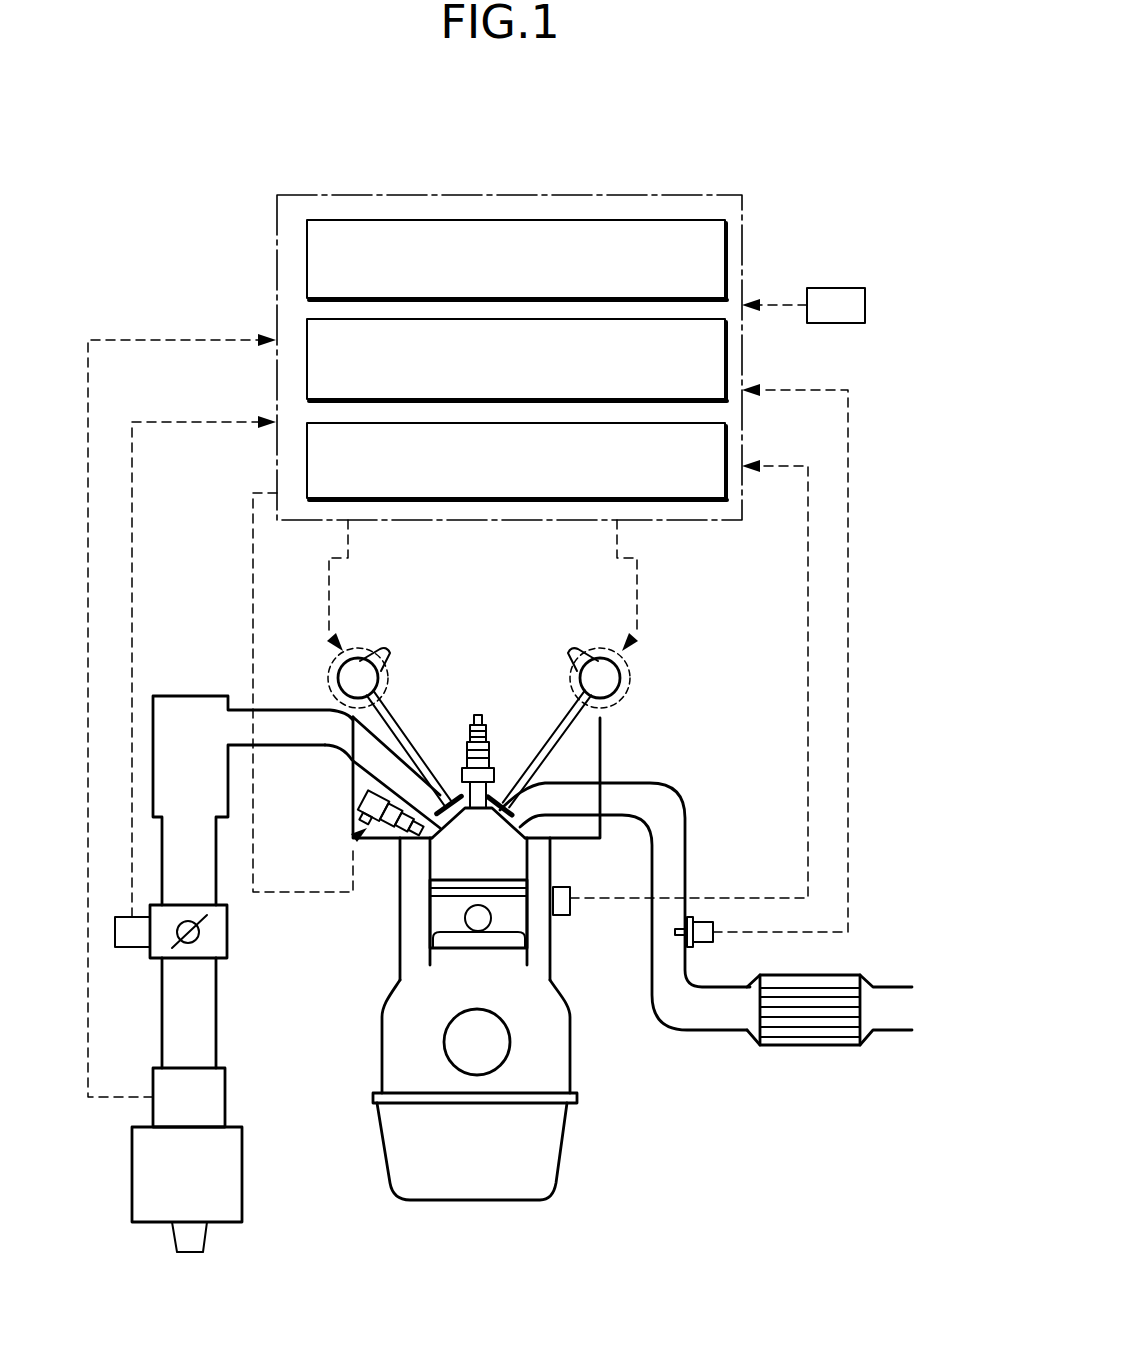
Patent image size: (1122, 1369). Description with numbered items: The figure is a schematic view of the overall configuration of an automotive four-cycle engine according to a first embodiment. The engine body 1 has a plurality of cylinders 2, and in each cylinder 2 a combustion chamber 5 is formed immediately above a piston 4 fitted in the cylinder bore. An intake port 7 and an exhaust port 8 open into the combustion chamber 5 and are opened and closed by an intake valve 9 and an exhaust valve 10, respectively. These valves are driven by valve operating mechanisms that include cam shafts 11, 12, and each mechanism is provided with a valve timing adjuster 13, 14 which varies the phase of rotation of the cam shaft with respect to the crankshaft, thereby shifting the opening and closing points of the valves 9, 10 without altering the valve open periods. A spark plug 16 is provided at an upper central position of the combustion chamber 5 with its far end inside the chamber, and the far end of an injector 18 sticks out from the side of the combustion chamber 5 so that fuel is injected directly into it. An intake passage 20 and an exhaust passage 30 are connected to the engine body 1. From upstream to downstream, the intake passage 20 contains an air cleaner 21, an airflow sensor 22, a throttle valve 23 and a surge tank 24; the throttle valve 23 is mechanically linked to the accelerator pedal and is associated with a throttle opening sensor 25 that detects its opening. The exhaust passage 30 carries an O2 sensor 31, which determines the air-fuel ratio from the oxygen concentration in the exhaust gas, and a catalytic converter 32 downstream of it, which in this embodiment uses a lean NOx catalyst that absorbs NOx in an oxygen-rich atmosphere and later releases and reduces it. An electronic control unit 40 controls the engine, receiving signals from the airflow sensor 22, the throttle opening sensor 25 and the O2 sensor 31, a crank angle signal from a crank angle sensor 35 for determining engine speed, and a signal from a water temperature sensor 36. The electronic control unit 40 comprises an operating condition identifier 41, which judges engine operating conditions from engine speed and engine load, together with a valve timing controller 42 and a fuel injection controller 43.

The engine body 1 is at (585, 1147).
The cylinder 2 is at (440, 865).
The piston 4 is at (515, 918).
The combustion chamber 5 is at (502, 860).
The intake port 7 is at (458, 794).
The exhaust port 8 is at (504, 795).
The intake valve 9 is at (410, 760).
The exhaust valve 10 is at (555, 765).
The cam shaft 11 is at (386, 688).
The cam shaft 12 is at (615, 656).
The valve timing adjuster 13 is at (312, 666).
The valve timing adjuster 14 is at (652, 676).
The spark plug 16 is at (478, 715).
The injector 18 is at (357, 797).
The intake passage 20 is at (218, 865).
The air cleaner 21 is at (242, 1168).
The airflow sensor 22 is at (225, 1090).
The throttle valve 23 is at (176, 949).
The surge tank 24 is at (190, 696).
The throttle opening sensor 25 is at (128, 950).
The exhaust passage 30 is at (650, 975).
The O2 sensor 31 is at (713, 947).
The catalytic converter 32 is at (808, 1045).
The crank angle sensor 35 is at (837, 288).
The water temperature sensor 36 is at (558, 917).
The electronic control unit 40 is at (378, 178).
The operating condition identifier 41 is at (598, 220).
The valve timing controller 42 is at (305, 380).
The fuel injection controller 43 is at (305, 470).